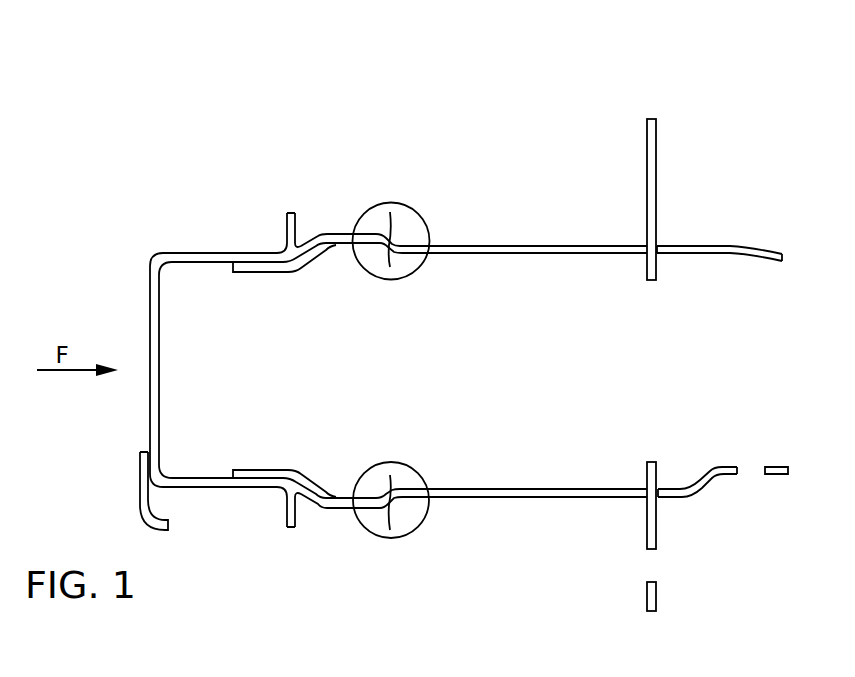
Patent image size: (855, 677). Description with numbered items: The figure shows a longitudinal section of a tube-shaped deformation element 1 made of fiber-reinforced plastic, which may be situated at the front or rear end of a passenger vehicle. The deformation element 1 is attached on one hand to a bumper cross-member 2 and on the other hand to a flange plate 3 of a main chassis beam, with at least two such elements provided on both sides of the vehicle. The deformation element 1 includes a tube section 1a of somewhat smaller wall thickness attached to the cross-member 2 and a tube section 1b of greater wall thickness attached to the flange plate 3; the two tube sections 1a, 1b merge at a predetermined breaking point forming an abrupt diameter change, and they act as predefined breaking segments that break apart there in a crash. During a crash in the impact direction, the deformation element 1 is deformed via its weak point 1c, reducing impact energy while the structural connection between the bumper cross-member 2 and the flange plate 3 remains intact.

The deformation element 1 is at (417, 100).
The tube section 1a is at (337, 235).
The tube section 1b is at (533, 247).
The weak point 1c is at (392, 498).
The bumper cross-member 2 is at (133, 287).
The flange plate 3 is at (655, 177).